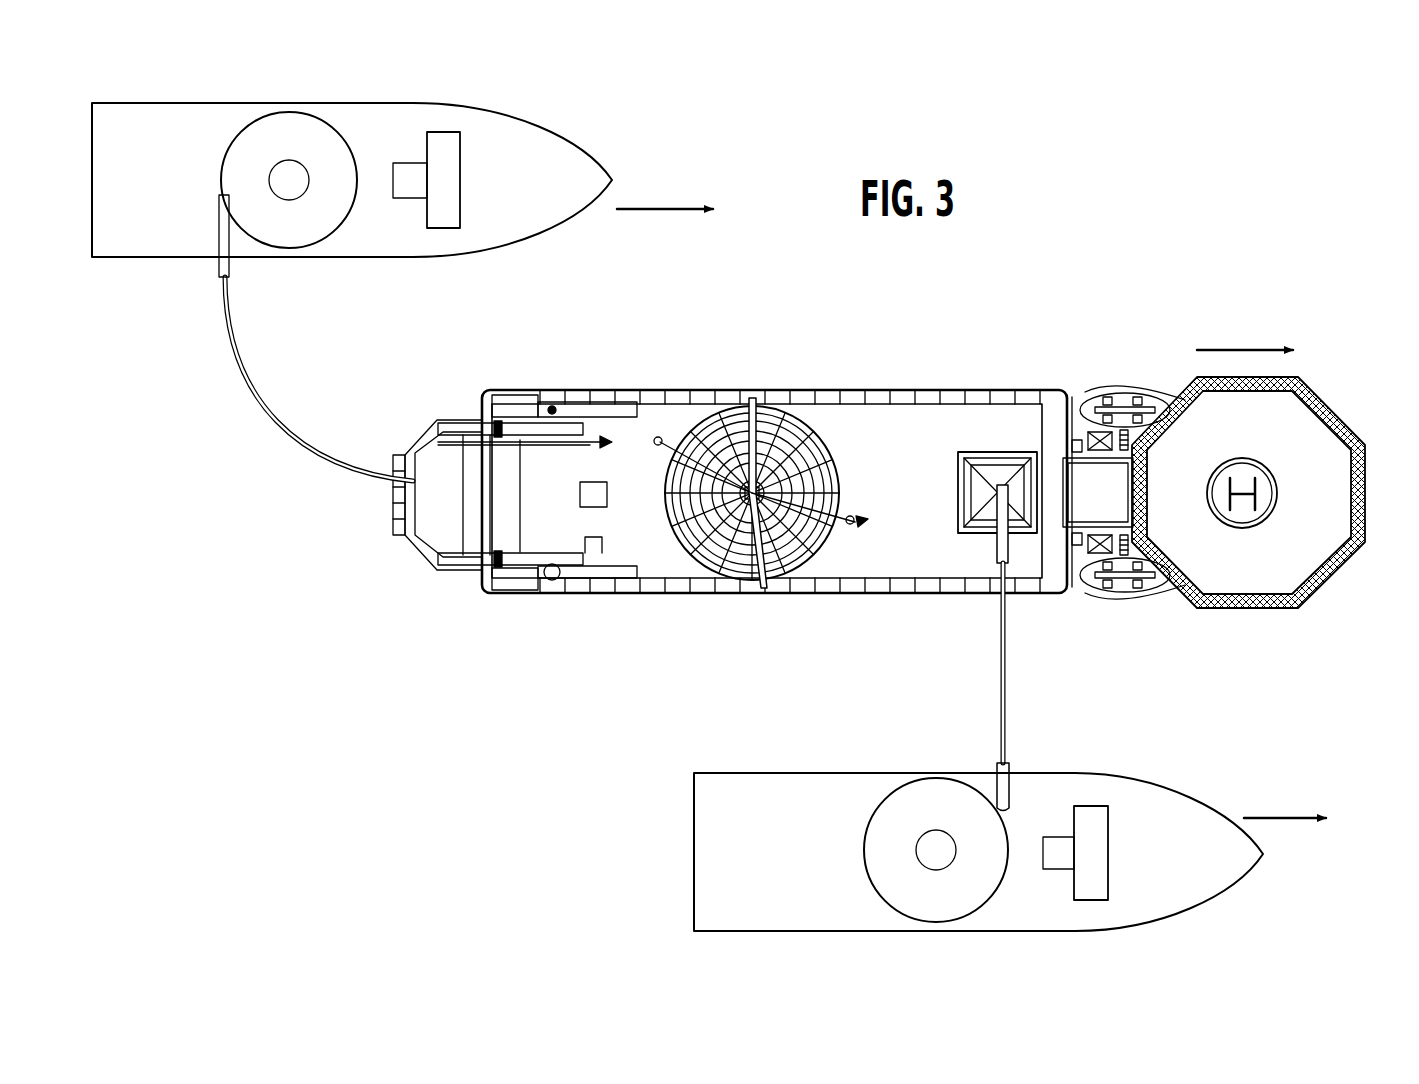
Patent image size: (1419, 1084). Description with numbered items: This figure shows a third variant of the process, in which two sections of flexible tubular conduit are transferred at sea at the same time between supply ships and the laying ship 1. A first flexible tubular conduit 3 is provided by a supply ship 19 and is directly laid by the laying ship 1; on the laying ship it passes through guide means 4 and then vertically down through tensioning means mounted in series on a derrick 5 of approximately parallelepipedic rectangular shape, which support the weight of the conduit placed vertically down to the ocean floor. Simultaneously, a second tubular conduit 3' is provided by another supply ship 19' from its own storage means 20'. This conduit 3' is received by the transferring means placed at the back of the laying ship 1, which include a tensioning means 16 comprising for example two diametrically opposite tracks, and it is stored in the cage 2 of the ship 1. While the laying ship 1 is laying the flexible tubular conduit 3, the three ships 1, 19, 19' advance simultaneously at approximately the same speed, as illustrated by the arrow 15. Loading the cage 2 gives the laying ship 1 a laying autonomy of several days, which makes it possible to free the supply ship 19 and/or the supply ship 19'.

The laying ship 1 is at (900, 385).
The cage 2 is at (838, 478).
The flexible tubular conduit 3 is at (1023, 687).
The flexible tubular conduit 3' is at (319, 384).
The guide means 4 is at (995, 548).
The derrick 5 is at (990, 450).
The arrow 15 is at (637, 209).
The tensioning means 16 is at (578, 452).
The supply ship 19 is at (978, 834).
The supply ship 19' is at (352, 177).
The storage means 20' is at (263, 194).